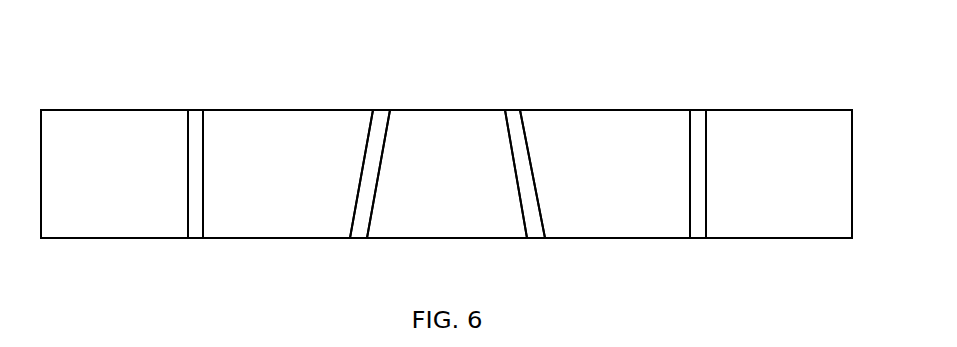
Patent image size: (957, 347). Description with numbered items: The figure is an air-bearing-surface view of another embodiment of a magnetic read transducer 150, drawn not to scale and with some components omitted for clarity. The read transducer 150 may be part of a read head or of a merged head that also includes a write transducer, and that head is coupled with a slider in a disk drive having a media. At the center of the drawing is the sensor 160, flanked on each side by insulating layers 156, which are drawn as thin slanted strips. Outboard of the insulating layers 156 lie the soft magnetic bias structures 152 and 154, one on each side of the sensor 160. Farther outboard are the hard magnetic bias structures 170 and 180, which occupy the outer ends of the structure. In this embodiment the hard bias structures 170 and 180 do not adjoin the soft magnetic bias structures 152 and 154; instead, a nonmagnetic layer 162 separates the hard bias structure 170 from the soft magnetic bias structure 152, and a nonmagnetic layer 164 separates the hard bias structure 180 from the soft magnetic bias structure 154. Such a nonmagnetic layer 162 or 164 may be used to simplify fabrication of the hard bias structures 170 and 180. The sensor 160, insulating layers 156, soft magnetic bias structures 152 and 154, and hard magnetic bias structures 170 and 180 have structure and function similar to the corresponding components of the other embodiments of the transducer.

The magnetic transducer 150 is at (468, 74).
The soft magnetic bias structure 152 is at (623, 238).
The soft magnetic bias structure 154 is at (252, 238).
The insulating layer 156 is at (362, 238).
The sensor 160 is at (413, 238).
The nonmagnetic layer 162 is at (698, 110).
The nonmagnetic layer 164 is at (193, 110).
The hard magnetic bias structure 170 is at (768, 238).
The hard magnetic bias structure 180 is at (125, 238).